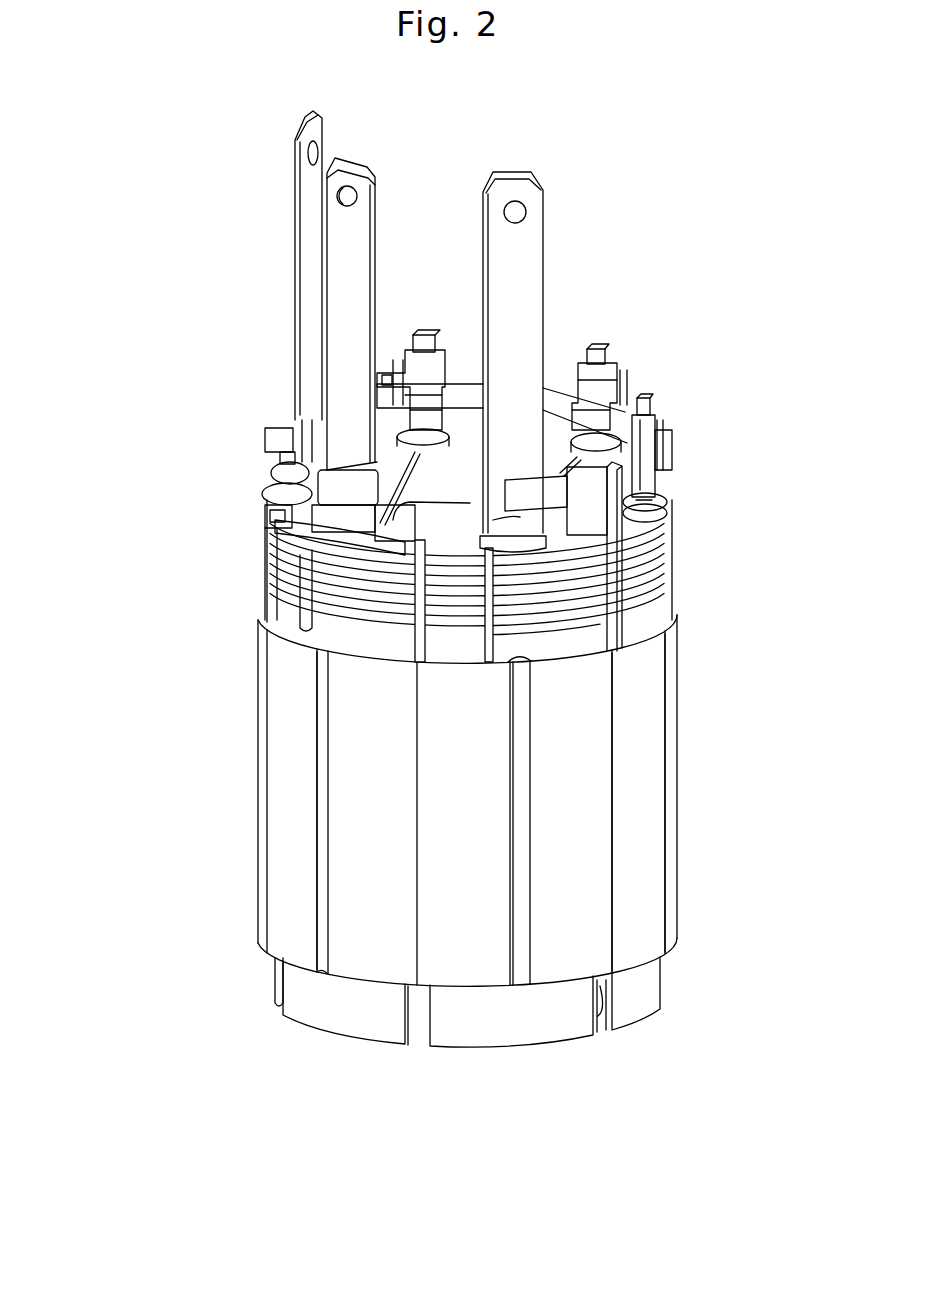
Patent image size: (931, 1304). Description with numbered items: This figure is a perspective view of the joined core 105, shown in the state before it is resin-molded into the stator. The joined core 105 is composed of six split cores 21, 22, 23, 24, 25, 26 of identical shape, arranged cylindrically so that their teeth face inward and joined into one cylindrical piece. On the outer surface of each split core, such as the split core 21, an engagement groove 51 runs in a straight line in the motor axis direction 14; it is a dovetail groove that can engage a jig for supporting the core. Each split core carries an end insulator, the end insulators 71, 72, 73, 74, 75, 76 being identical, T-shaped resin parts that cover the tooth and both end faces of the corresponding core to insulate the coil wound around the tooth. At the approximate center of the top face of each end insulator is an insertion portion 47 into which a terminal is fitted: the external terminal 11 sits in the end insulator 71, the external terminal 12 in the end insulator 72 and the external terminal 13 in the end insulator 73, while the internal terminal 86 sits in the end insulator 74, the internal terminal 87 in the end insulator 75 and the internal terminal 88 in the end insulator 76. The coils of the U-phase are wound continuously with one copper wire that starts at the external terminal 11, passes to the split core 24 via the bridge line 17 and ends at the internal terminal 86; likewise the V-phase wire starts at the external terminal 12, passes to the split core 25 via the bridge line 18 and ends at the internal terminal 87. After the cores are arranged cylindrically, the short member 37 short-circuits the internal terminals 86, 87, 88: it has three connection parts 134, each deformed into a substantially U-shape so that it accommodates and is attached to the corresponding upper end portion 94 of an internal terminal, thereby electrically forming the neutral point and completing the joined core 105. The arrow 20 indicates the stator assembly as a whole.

The joined core 105 is at (156, 278).
The external terminal 13 is at (295, 196).
The external terminal 12 is at (345, 292).
The external terminal 11 is at (515, 240).
The connection part 134 is at (393, 400).
The split core 24 is at (415, 326).
The upper end portion 94 is at (426, 340).
The internal terminal 86 is at (443, 334).
The internal terminal 87 is at (576, 345).
The internal terminal 88 is at (683, 450).
The end insulator 74 is at (433, 470).
The end insulator 75 is at (547, 443).
The split core 25 is at (627, 370).
The short member 37 is at (608, 415).
The split core 23 is at (232, 452).
The insertion portion 47 is at (275, 480).
The end insulator 73 is at (275, 484).
The bridge line 18 is at (268, 563).
The bridge line 17 is at (600, 555).
The end insulator 72 is at (330, 628).
The end insulator 71 is at (537, 642).
The end insulator 76 is at (660, 538).
The motor axis direction 14 is at (142, 588).
The stator 20 is at (735, 712).
The split core 21 is at (567, 781).
The split core 22 is at (365, 866).
The split core 26 is at (642, 846).
The engagement groove 51 is at (320, 800).